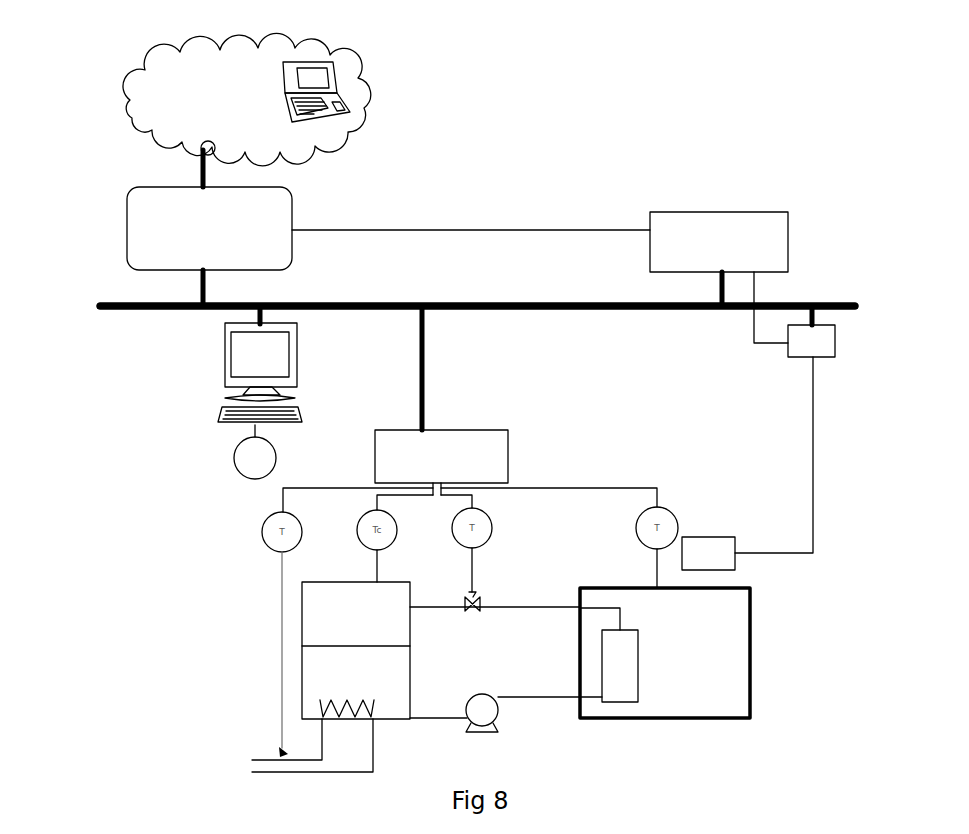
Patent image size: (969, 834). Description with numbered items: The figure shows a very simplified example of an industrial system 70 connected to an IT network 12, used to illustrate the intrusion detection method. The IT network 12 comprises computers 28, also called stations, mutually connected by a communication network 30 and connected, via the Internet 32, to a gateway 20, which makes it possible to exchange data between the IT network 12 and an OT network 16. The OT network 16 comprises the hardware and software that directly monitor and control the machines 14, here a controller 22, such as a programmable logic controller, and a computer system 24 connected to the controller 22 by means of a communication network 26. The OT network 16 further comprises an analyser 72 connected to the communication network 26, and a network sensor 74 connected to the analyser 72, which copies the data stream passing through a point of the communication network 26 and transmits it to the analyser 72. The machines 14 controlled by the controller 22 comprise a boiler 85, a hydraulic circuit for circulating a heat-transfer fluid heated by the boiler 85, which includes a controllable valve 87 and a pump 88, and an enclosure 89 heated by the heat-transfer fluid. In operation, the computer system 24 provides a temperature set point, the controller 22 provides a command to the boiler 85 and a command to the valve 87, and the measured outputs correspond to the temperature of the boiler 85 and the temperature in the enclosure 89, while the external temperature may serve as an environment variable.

The IT network 12 is at (392, 89).
The machines 14 is at (223, 501).
The OT network 16 is at (692, 441).
The gateway 20 is at (126, 226).
The controller 22 is at (472, 427).
The computer system 24 is at (299, 353).
The communication network 26 is at (538, 302).
The computers 28 is at (283, 83).
The communication network 30 is at (468, 301).
The Internet 32 is at (318, 138).
The industrial system 70 is at (120, 390).
The analyser 72 is at (710, 212).
The network sensor 74 is at (836, 338).
The boiler 85 is at (385, 722).
The controllable valve 87 is at (477, 611).
The pump 88 is at (464, 700).
The enclosure 89 is at (688, 718).